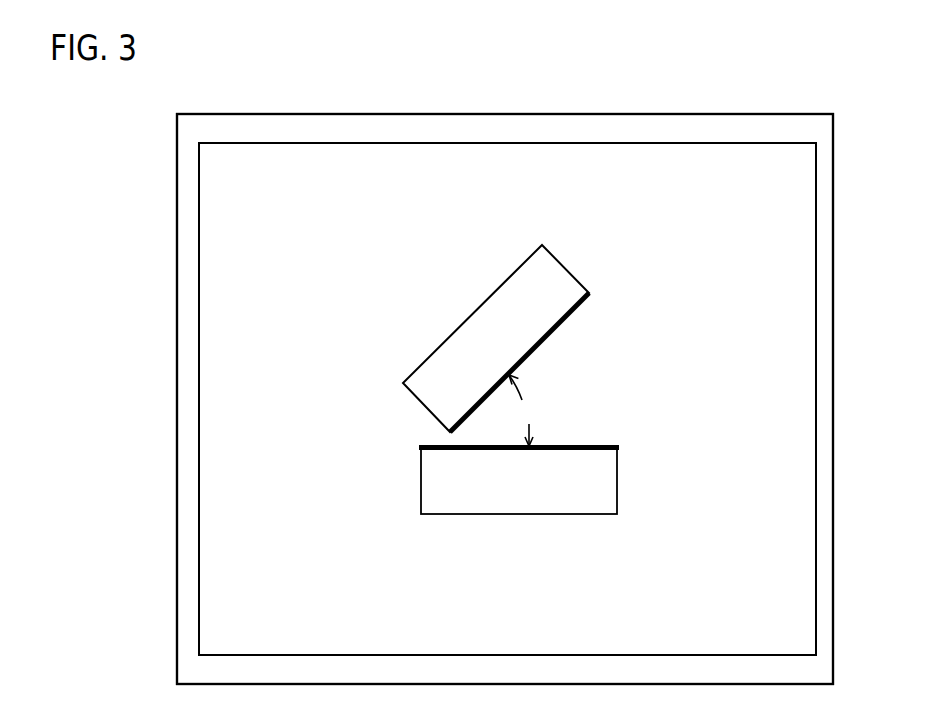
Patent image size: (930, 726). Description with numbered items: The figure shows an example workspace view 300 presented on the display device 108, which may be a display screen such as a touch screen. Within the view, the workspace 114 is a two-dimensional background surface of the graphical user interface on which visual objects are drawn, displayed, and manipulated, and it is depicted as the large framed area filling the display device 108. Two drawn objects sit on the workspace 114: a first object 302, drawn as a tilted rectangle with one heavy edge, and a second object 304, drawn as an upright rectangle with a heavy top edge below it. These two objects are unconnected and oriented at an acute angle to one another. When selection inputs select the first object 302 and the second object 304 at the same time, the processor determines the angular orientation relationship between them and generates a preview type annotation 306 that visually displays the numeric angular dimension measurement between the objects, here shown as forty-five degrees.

The workspace view 300 is at (692, 68).
The display device 108 is at (177, 129).
The workspace 114 is at (324, 190).
The first object 302 is at (568, 318).
The second object 304 is at (573, 445).
The preview type annotation 306 is at (547, 403).